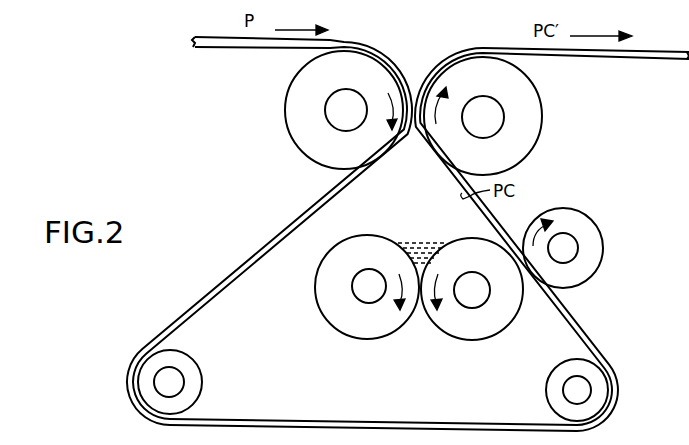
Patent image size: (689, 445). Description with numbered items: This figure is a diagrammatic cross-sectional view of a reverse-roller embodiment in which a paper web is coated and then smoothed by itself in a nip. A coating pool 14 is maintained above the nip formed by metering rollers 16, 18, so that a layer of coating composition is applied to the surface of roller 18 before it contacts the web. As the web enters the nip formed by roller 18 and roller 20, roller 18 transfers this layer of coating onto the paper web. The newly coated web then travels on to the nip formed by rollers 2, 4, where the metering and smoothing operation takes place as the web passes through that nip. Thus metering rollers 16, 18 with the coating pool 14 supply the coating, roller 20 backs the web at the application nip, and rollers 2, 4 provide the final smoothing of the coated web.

The roller 2 is at (288, 109).
The roller 4 is at (525, 100).
The coating pool 14 is at (417, 246).
The metering roller 16 is at (347, 317).
The metering roller 18 is at (454, 322).
The roller 20 is at (588, 257).